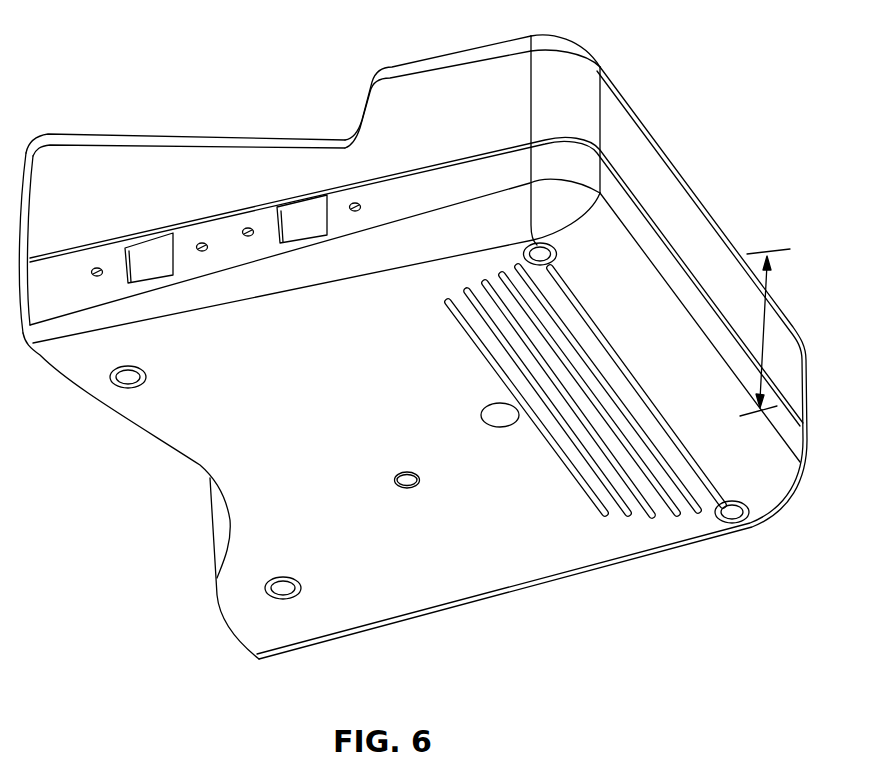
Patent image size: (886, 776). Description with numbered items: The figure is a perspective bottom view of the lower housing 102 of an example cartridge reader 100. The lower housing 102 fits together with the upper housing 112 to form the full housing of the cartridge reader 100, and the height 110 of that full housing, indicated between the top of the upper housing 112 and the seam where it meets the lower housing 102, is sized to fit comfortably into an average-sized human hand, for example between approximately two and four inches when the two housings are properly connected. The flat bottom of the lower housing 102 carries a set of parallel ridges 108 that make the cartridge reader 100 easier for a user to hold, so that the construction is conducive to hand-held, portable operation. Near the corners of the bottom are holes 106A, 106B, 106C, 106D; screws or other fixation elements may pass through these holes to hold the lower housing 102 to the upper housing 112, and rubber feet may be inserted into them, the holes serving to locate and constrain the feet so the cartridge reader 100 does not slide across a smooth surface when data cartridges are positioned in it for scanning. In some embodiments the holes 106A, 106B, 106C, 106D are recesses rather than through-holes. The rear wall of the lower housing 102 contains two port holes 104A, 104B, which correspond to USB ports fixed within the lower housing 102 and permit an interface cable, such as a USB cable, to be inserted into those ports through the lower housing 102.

The cartridge reader 100 is at (703, 76).
The lower housing 102 is at (650, 242).
The port hole 104A is at (315, 215).
The port hole 104B is at (163, 253).
The hole 106A is at (546, 257).
The hole 106B is at (136, 380).
The hole 106C is at (287, 593).
The hole 106D is at (732, 515).
The ridges 108 is at (639, 374).
The height 110 is at (767, 278).
The upper housing 112 is at (452, 86).